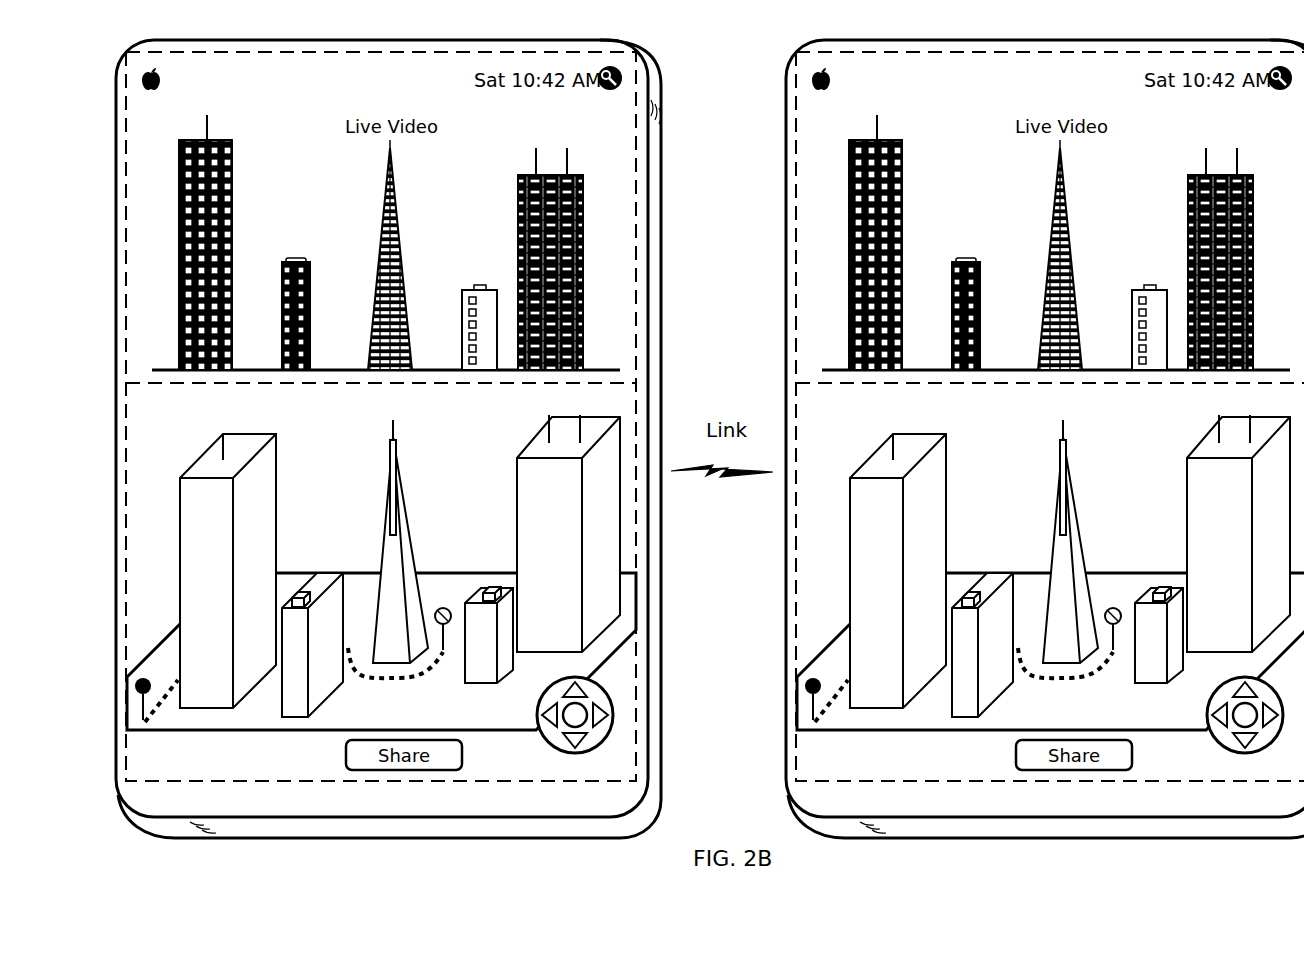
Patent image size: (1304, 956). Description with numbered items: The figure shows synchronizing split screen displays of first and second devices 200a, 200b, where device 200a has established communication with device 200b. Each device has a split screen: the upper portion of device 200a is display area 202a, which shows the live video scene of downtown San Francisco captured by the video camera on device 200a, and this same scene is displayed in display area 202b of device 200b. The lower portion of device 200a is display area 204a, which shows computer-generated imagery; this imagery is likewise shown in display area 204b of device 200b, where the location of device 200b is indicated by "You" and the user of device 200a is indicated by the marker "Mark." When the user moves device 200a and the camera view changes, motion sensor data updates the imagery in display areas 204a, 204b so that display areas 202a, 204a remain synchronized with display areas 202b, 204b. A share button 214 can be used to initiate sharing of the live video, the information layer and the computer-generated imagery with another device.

The first device 200a is at (660, 66).
The second device 200b is at (999, 439).
The display area 202a is at (484, 136).
The display area 202b is at (1056, 237).
The display area 204a is at (190, 424).
The display area 204b is at (1050, 572).
The share button 214 is at (462, 752).